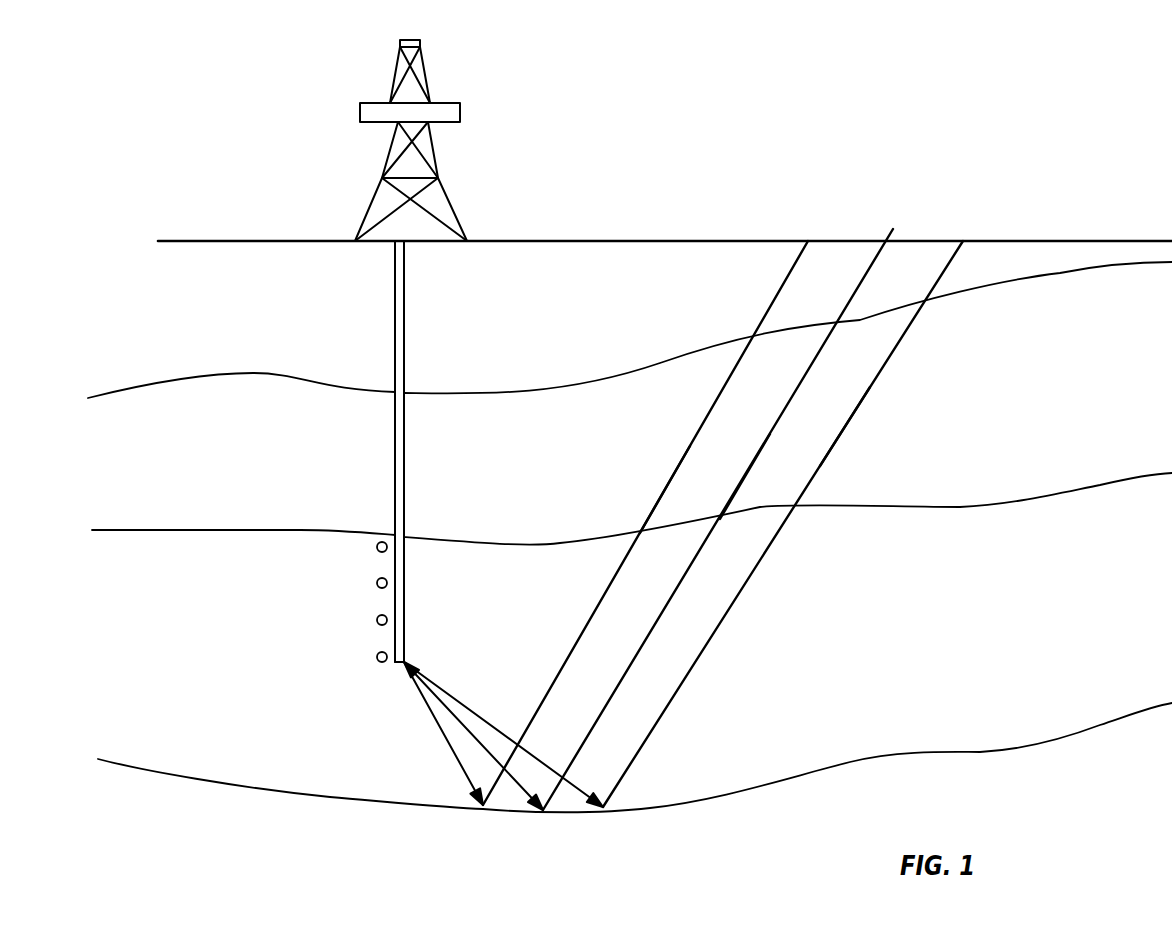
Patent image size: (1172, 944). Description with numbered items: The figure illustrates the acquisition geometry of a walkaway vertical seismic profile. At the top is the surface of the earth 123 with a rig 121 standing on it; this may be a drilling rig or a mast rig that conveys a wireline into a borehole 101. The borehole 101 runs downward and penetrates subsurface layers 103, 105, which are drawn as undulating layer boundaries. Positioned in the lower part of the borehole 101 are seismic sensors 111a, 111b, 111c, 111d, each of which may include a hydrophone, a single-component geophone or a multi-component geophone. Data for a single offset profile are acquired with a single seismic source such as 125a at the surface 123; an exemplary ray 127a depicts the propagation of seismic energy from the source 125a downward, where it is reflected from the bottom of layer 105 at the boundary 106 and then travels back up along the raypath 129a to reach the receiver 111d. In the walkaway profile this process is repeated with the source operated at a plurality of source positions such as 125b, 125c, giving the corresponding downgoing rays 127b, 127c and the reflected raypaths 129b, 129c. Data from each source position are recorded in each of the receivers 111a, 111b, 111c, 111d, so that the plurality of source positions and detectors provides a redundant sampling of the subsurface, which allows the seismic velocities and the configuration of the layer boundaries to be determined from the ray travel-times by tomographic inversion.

The borehole 101 is at (395, 326).
The layer 103 is at (123, 330).
The layer 105 is at (123, 488).
The boundary 106 is at (150, 773).
The seismic sensor 111a is at (377, 548).
The seismic sensor 111b is at (377, 584).
The seismic sensor 111c is at (377, 621).
The seismic sensor 111d is at (377, 658).
The rig 121 is at (428, 100).
The surface of the earth 123 is at (622, 241).
The seismic source 125a is at (797, 250).
The source position 125b is at (872, 258).
The source position 125c is at (955, 258).
The ray 127a is at (667, 488).
The ray 127b is at (742, 477).
The ray 127c is at (850, 425).
The raypath 129a is at (423, 708).
The raypath 129b is at (462, 727).
The raypath 129c is at (452, 692).